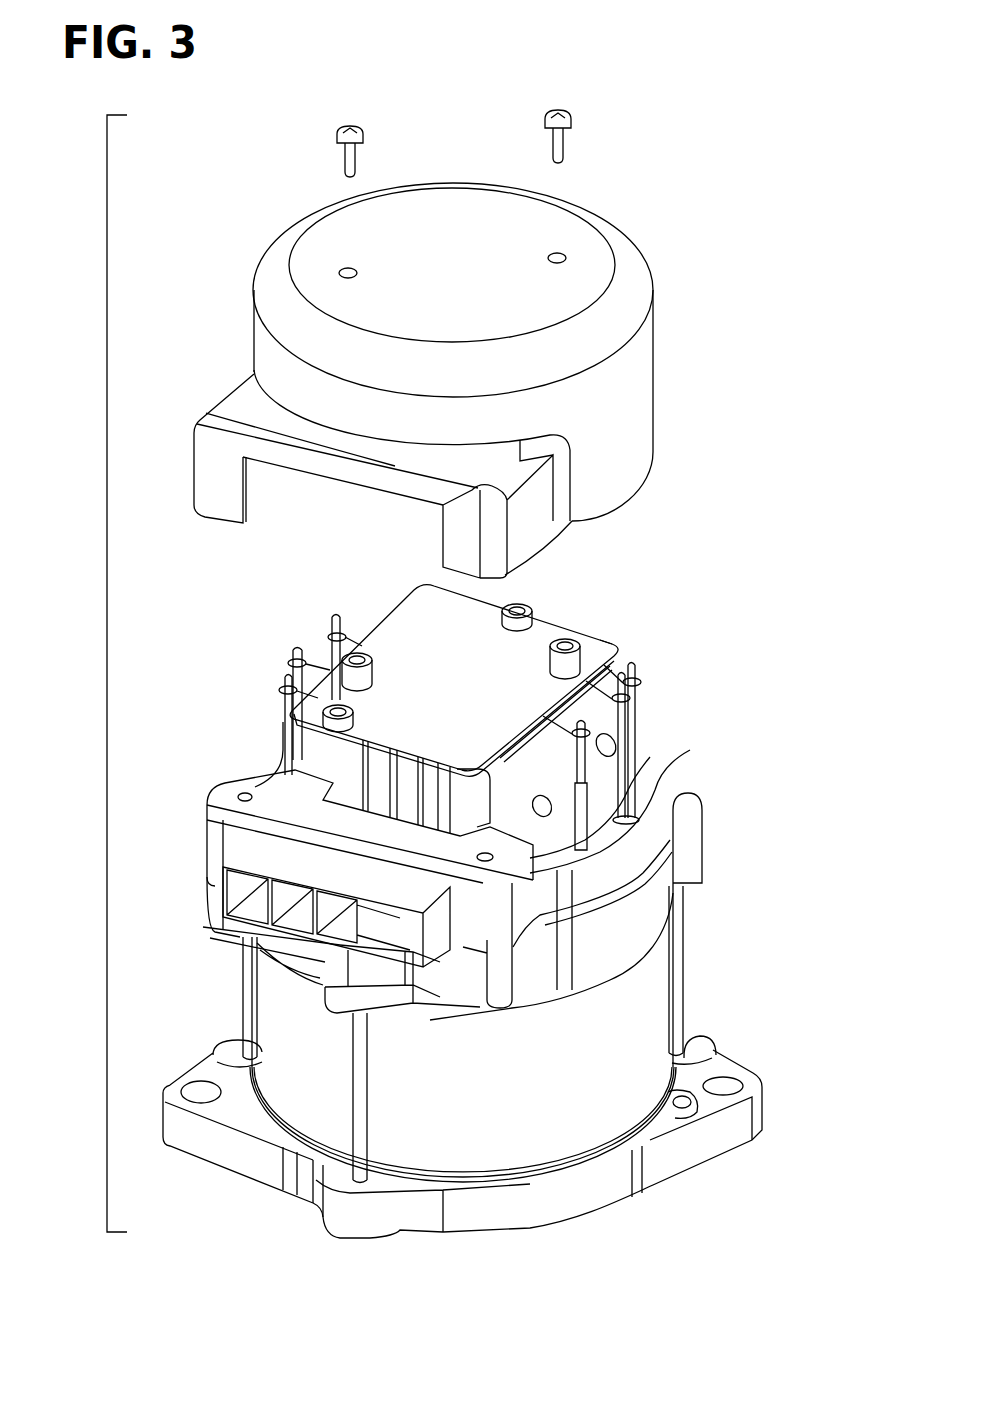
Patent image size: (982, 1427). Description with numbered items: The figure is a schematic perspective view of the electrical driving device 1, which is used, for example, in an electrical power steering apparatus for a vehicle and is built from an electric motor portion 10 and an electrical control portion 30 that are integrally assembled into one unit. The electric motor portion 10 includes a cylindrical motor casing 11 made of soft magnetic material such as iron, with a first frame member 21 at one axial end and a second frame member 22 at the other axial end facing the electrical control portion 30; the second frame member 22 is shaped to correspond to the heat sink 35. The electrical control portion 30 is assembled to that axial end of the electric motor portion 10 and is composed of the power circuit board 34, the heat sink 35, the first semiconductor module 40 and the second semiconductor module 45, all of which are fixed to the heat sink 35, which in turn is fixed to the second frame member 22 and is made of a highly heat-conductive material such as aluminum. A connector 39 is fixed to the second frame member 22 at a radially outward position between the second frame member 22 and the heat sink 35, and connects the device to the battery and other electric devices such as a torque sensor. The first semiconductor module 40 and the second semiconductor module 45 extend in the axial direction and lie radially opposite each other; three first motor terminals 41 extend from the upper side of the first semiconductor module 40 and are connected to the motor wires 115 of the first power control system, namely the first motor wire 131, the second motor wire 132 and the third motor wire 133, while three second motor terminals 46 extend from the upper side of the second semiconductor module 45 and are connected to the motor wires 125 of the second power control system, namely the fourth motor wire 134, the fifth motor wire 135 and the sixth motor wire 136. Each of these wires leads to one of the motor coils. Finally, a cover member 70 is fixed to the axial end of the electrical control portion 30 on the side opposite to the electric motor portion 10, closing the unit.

The electrical driving device 1 is at (258, 1247).
The electric motor portion 10 is at (699, 944).
The motor casing 11 is at (638, 1003).
The first frame member 21 is at (762, 1120).
The second frame member 22 is at (697, 830).
The electrical control portion 30 is at (610, 625).
The power circuit board 34 is at (540, 620).
The heat sink 35 is at (220, 798).
The connector 39 is at (253, 852).
The first semiconductor module 40 is at (557, 868).
The first motor terminals 41 is at (621, 635).
The second semiconductor module 45 is at (320, 752).
The second motor terminals 46 is at (353, 625).
The cover member 70 is at (655, 390).
The motor wires of the first power control system 115 is at (177, 617).
The motor wires of the second power control system 125 is at (760, 640).
The first motor wire 131 is at (280, 703).
The second motor wire 132 is at (288, 660).
The third motor wire 133 is at (328, 640).
The fourth motor wire 134 is at (638, 672).
The fifth motor wire 135 is at (627, 702).
The sixth motor wire 136 is at (586, 763).